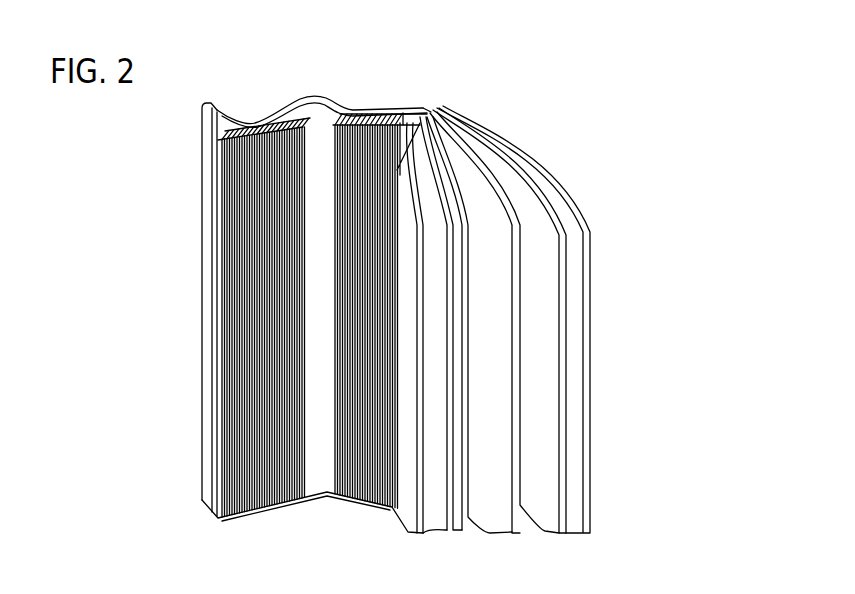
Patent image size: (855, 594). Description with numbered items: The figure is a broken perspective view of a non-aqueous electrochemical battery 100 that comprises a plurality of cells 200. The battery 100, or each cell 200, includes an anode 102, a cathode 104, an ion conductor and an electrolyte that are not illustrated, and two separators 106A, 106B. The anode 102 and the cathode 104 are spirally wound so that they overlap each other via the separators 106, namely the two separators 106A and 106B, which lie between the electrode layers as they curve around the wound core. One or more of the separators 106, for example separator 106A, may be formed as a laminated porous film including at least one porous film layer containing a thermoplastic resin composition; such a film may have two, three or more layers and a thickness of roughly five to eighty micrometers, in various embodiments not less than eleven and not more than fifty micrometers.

The battery 100 is at (694, 60).
The cell 200 is at (257, 127).
The anode 102 is at (523, 293).
The cathode 104 is at (423, 436).
The separator 106 is at (515, 187).
The separator 106A is at (464, 347).
The separator 106B is at (451, 386).